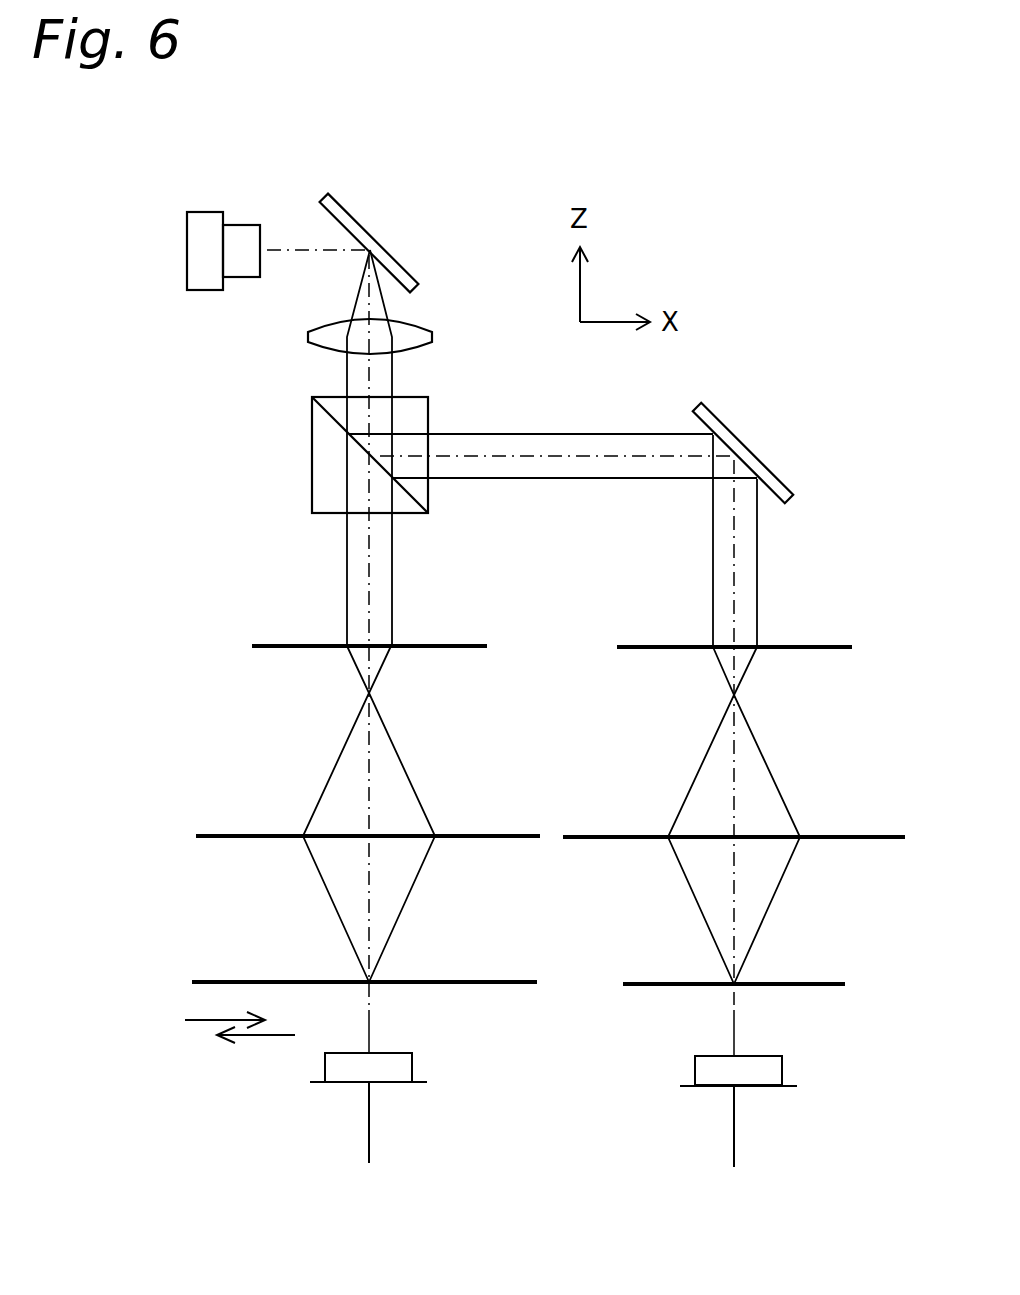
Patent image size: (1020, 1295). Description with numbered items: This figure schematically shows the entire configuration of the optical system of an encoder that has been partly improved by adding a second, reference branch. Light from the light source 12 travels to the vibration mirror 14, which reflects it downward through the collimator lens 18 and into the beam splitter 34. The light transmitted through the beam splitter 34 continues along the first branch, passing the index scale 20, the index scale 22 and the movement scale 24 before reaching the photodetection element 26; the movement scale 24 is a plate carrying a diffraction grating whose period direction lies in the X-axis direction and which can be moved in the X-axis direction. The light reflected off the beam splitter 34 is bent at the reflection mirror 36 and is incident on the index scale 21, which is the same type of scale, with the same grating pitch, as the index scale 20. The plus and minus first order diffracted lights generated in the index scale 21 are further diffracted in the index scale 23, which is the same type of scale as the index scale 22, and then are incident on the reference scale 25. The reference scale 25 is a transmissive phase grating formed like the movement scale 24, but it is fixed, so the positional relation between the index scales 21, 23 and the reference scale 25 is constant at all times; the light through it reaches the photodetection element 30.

The light source 12 is at (247, 224).
The vibration mirror 14 is at (377, 240).
The collimator lens 18 is at (428, 333).
The index scale 20 is at (275, 646).
The index scale 21 is at (822, 647).
The index scale 22 is at (214, 836).
The index scale 23 is at (860, 837).
The movement scale 24 is at (250, 982).
The reference scale 25 is at (815, 984).
The photodetection element 26 is at (412, 1070).
The photodetection element 30 is at (782, 1072).
The beam splitter 34 is at (312, 466).
The reflection mirror 36 is at (730, 428).